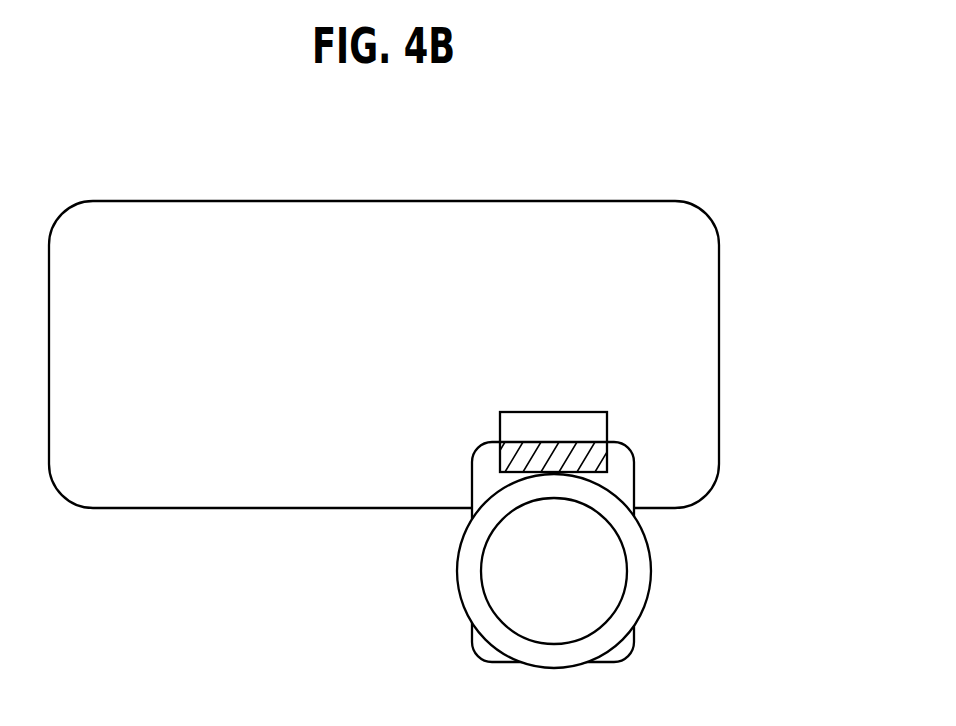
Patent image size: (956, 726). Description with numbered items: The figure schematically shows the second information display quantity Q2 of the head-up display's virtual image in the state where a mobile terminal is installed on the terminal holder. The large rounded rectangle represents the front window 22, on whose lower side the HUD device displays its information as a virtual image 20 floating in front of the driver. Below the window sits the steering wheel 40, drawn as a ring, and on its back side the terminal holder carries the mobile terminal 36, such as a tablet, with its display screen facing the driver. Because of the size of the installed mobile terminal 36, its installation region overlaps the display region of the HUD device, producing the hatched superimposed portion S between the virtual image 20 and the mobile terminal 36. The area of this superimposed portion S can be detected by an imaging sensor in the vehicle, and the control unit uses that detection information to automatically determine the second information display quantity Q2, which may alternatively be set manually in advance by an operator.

The virtual image 20 is at (579, 395).
The front window 22 is at (719, 355).
The mobile terminal 36 is at (633, 470).
The steering wheel 40 is at (651, 572).
The second information display quantity Q2 is at (578, 427).
The superimposed portion S is at (577, 457).